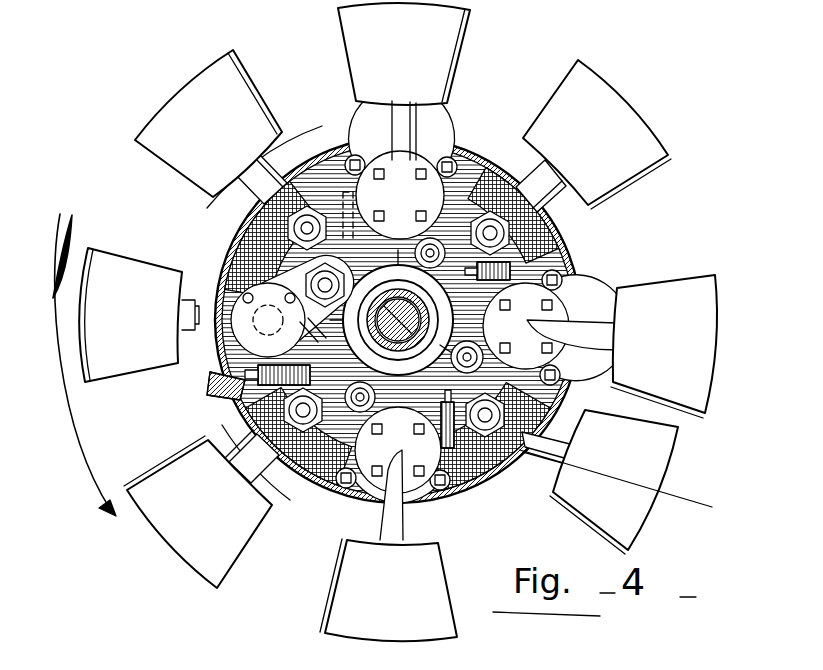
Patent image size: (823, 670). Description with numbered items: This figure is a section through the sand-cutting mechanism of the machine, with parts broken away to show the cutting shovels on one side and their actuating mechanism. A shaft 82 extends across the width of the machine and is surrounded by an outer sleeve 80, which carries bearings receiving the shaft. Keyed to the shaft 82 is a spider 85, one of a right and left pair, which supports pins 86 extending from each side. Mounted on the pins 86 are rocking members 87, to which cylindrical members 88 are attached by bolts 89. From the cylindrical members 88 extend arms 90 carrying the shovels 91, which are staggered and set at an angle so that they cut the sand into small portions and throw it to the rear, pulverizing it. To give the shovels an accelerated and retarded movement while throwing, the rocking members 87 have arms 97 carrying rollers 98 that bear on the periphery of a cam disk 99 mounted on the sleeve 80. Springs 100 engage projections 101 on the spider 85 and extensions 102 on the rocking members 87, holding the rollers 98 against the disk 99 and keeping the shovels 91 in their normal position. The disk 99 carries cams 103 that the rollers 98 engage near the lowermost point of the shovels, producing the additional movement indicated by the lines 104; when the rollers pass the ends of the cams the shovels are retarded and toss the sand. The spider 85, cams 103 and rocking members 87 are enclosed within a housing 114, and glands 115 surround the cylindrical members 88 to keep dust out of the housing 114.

The outer sleeve 80 is at (358, 322).
The shaft 82 is at (404, 272).
The spider 85 is at (486, 212).
The pin 86 is at (323, 205).
The rocking member 87 is at (550, 235).
The cylindrical member 88 is at (412, 482).
The bolt 89 is at (372, 152).
The arm 90 is at (588, 328).
The shovel 91 is at (518, 458).
The arm 97 is at (300, 230).
The roller 98 is at (208, 208).
The cam disk 99 is at (440, 200).
The spring 100 is at (468, 478).
The projection 101 is at (285, 392).
The extension 102 is at (213, 376).
The cam 103 is at (404, 343).
The lines indicating additional movement 104 is at (680, 497).
The housing 114 is at (300, 440).
The gland 115 is at (345, 480).